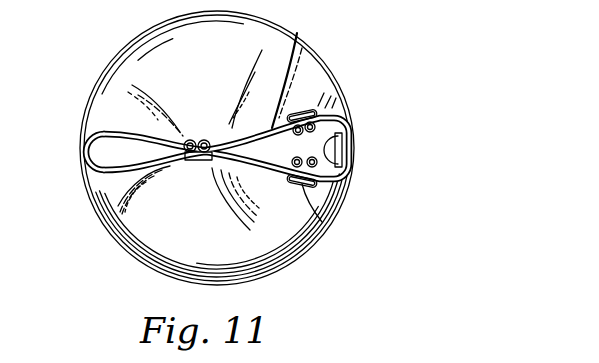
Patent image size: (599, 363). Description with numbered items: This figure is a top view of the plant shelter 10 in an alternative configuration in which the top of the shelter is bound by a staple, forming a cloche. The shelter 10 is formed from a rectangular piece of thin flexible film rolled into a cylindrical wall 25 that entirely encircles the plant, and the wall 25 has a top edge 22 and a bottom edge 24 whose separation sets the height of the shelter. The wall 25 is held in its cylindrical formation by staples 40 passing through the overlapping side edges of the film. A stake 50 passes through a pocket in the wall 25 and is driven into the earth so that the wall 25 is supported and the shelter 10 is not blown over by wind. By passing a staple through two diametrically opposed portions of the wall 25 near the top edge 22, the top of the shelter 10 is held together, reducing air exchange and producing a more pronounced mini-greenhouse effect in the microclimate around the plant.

The plant shelter 10 is at (277, 154).
The top edge 22 is at (107, 130).
The bottom edge 24 is at (268, 275).
The cylindrical wall 25 is at (126, 199).
The staples 40 is at (302, 114).
The stake 50 is at (353, 157).